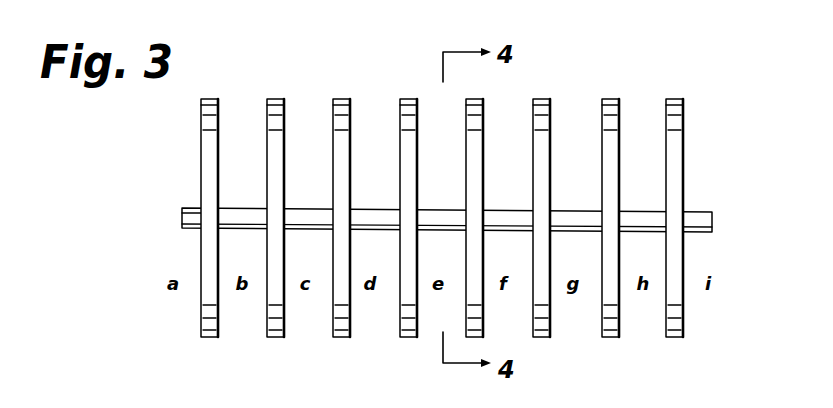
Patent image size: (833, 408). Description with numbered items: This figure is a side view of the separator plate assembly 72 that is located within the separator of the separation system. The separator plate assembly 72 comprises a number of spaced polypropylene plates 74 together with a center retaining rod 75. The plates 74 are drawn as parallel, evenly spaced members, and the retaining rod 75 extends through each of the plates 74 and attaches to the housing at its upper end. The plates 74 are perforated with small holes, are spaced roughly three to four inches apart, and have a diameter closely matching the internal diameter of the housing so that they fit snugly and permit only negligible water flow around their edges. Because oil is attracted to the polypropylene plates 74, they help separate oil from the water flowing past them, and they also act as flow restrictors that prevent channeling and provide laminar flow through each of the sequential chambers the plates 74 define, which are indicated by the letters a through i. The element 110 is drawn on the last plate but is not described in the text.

The separator plate assembly 72 is at (714, 106).
The plates 74 is at (273, 99).
The center retaining rod 75 is at (701, 212).
The end fin 110 is at (677, 277).